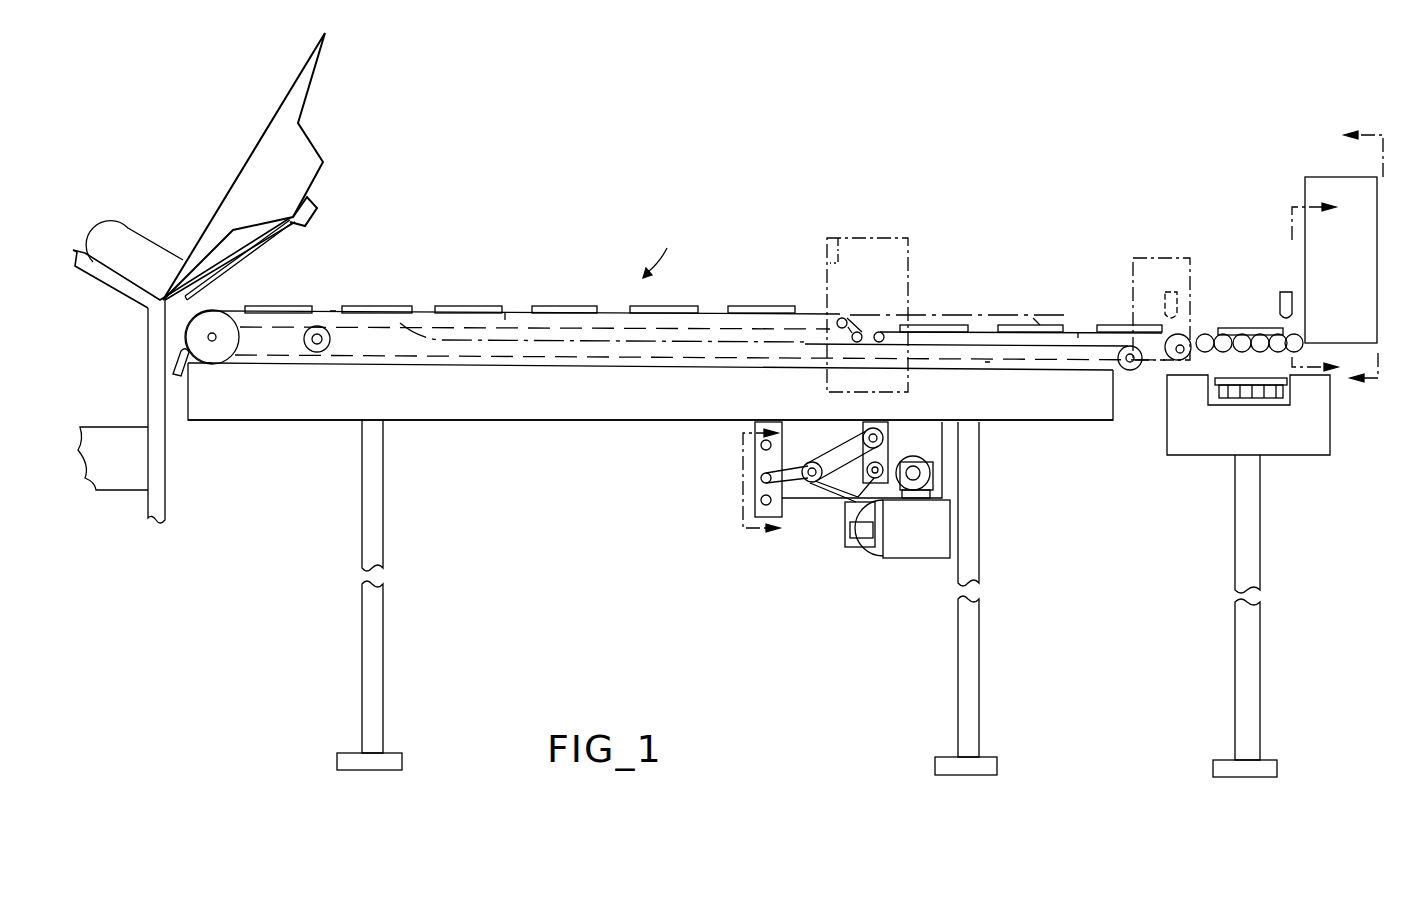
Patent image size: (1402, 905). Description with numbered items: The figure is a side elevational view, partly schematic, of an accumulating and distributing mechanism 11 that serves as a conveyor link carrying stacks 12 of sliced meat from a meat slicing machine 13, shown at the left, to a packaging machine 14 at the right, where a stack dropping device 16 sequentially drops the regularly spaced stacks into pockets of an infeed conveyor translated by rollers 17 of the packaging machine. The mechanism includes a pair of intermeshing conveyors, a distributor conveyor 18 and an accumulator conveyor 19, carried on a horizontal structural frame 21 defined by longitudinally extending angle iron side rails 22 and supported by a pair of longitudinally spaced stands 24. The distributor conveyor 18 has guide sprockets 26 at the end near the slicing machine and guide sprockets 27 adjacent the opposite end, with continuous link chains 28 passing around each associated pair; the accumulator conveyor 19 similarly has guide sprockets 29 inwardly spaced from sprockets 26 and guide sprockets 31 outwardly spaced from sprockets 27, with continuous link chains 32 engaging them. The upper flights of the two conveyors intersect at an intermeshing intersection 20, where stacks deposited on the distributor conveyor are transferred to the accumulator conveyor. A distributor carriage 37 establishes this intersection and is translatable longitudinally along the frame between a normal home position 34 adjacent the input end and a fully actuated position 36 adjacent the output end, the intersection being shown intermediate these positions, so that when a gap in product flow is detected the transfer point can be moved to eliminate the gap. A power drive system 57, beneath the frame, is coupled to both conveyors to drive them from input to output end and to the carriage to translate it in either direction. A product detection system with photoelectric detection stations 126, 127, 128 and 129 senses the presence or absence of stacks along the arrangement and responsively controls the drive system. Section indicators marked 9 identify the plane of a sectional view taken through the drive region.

The section line 9- 9 is at (776, 484).
The accumulating and distributing mechanism 11 is at (1013, 268).
The stacks of sliced meat 12 is at (418, 306).
The meat slicing machine 13 is at (318, 168).
The packaging machine 14 is at (1172, 448).
The stack dropping device 16 is at (1313, 257).
The rollers 17 is at (1240, 398).
The distributor conveyor 18 is at (330, 310).
The accumulator conveyor 19 is at (510, 327).
The intermeshing intersection 20 is at (855, 342).
The horizontal structural frame 21 is at (585, 432).
The angle iron side rails 22 is at (650, 400).
The stands 24 is at (374, 600).
The guide sprockets 26 is at (212, 356).
The guide sprockets 27 is at (1122, 368).
The continuous link chains 28 is at (573, 367).
The guide sprockets 29 is at (312, 350).
The guide sprockets 31 is at (1185, 338).
The continuous link chains 32 is at (708, 327).
The normal home position 34 is at (420, 322).
The fully actuated position 36 is at (1037, 318).
The distributor carriage 37 is at (908, 275).
The power drive system 57 is at (826, 545).
The photoelectric detection station 126 is at (1277, 310).
The photoelectric detection station 127 is at (1168, 290).
The photoelectric detection station 128 is at (172, 356).
The photoelectric detection station 129 is at (826, 236).